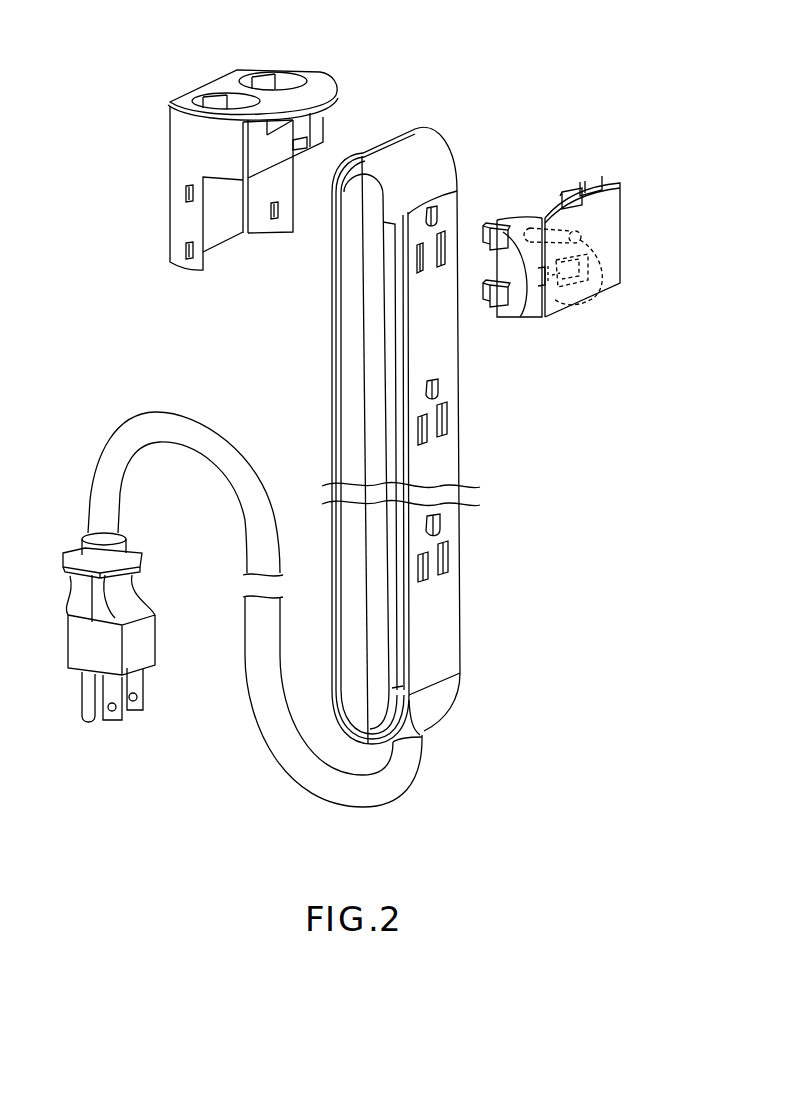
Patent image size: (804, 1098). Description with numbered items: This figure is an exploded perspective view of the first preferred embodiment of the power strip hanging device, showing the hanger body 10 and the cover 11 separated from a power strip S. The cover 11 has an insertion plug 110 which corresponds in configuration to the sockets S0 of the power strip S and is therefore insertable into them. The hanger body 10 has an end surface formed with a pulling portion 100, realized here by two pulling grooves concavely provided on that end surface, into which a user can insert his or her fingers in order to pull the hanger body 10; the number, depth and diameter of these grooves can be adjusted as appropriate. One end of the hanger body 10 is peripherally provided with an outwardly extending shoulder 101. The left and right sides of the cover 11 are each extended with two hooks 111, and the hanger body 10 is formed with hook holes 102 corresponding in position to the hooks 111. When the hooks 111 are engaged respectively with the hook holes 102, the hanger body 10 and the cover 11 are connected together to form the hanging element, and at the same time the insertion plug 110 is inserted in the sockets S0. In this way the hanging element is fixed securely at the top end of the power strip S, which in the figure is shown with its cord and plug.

The hanger body 10 is at (185, 153).
The pulling portion 100 is at (222, 108).
The shoulder 101 is at (167, 105).
The hook holes 102 is at (192, 198).
The cover 11 is at (607, 209).
The insertion plug 110 is at (580, 278).
The hooks 111 is at (566, 194).
The power strip S is at (440, 618).
The sockets S0 is at (443, 250).